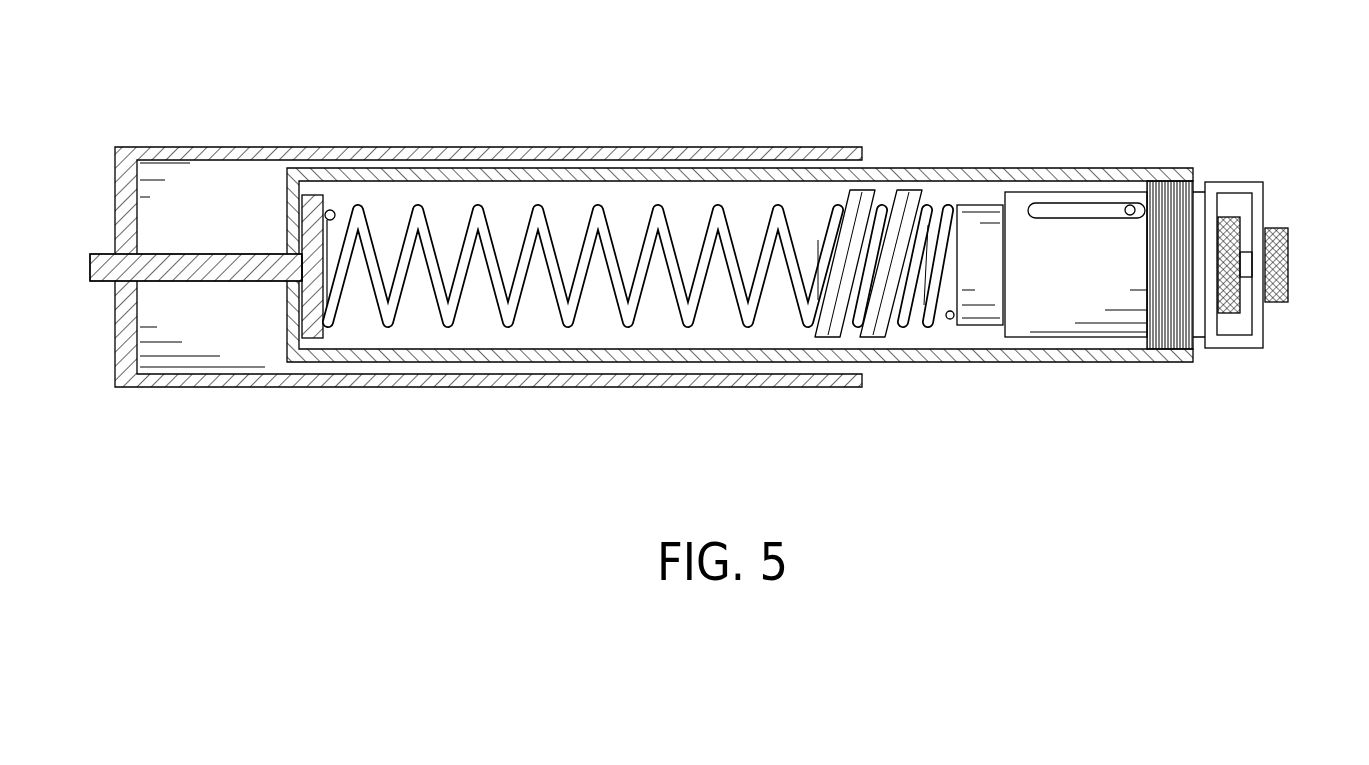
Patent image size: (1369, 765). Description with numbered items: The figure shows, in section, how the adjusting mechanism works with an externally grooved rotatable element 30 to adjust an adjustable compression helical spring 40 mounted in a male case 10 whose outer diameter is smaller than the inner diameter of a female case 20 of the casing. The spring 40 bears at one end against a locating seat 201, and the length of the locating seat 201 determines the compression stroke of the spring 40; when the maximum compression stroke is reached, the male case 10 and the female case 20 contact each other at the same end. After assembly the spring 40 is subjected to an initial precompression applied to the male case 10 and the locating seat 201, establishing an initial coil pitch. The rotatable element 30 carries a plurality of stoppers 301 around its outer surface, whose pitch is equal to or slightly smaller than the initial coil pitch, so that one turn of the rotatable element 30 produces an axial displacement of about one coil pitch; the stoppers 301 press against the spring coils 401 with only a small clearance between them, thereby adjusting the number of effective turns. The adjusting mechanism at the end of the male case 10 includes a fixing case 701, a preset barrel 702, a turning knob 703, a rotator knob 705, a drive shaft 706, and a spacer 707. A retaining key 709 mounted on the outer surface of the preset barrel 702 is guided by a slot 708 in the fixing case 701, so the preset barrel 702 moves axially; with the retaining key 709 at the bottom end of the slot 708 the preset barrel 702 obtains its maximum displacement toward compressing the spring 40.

The male case 10 is at (580, 170).
The female case 20 is at (727, 150).
The locating seat 201 is at (318, 192).
The rotatable element 30 is at (923, 275).
The stoppers 301 is at (860, 205).
The adjustable compression helical spring 40 is at (581, 332).
The spring coils 401 is at (588, 292).
The fixing case 701 is at (1105, 257).
The preset barrel 702 is at (975, 215).
The turning knob 703 is at (1228, 315).
The rotator knob 705 is at (1278, 228).
The drive shaft 706 is at (1248, 270).
The spacer 707 is at (1285, 248).
The slot 708 is at (1068, 205).
The retaining key 709 is at (1130, 205).